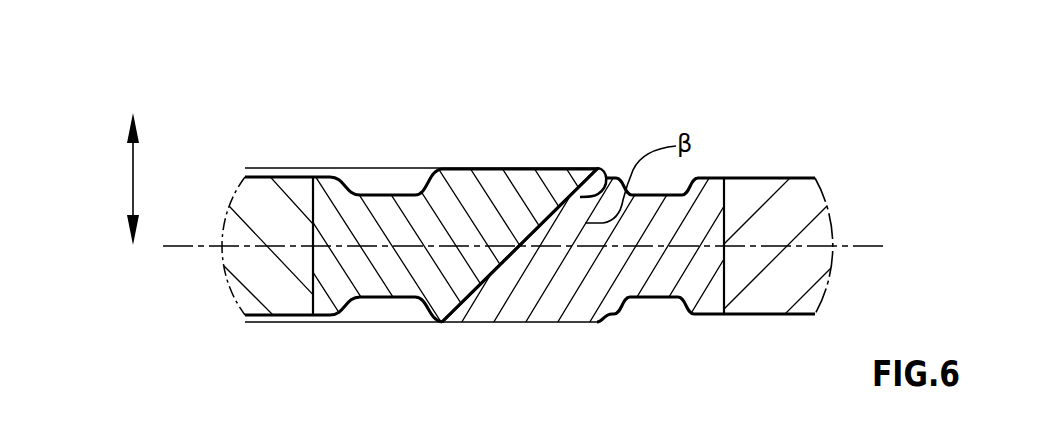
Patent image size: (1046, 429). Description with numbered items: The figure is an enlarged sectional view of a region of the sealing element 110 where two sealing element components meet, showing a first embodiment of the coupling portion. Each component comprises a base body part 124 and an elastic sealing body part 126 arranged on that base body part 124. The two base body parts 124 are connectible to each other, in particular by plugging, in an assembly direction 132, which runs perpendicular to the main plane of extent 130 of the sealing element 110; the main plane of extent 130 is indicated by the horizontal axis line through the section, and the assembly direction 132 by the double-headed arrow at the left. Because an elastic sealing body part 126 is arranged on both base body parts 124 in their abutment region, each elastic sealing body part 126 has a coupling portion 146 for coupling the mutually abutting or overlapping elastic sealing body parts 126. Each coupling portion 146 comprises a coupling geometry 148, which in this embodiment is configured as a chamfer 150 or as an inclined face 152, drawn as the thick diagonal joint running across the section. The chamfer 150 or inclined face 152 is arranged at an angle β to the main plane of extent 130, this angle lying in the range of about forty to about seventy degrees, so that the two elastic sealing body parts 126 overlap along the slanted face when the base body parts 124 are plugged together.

The sealing element 110 is at (585, 89).
The base body part 124 is at (247, 200).
The elastic sealing body part 126 is at (460, 187).
The main plane of extent 130 is at (857, 246).
The assembly direction 132 is at (133, 178).
The coupling portion 146 is at (526, 236).
The coupling geometry 148 is at (498, 262).
The chamfer 150 is at (605, 186).
The inclined face 152 is at (535, 198).